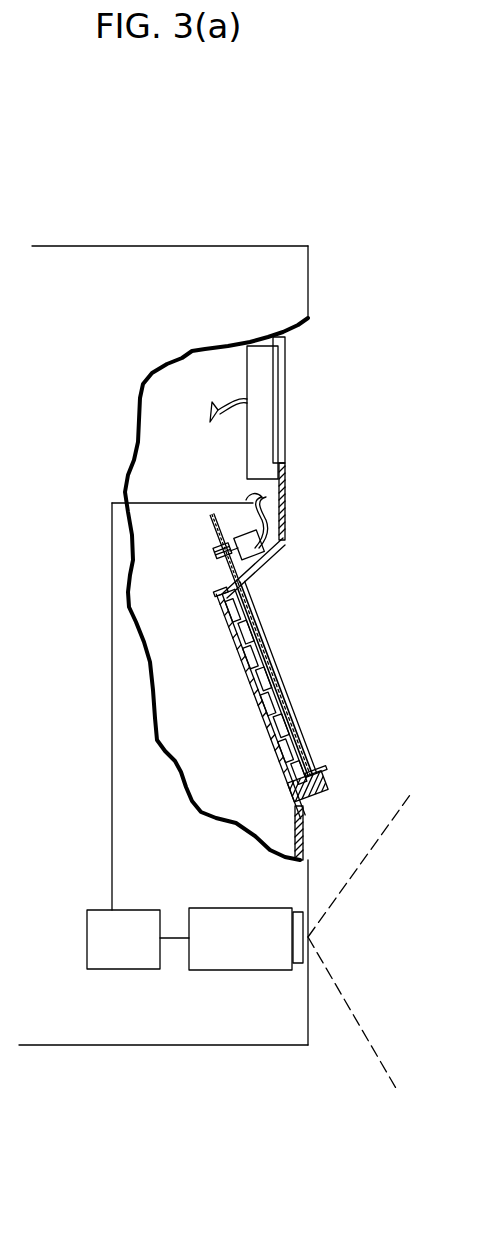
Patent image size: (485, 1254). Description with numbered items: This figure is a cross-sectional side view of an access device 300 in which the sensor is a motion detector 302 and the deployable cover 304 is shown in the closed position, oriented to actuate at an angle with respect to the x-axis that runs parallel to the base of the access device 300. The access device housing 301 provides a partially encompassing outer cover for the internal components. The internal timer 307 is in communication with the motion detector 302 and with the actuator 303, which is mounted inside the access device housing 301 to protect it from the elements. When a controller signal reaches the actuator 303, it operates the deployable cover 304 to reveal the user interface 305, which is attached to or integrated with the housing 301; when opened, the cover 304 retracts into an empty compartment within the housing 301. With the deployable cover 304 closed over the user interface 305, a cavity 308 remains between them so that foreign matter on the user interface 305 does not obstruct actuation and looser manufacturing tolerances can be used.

The access device 300 is at (134, 208).
The access device housing 301 is at (309, 258).
The motion detector 302 is at (252, 908).
The actuator 303 is at (257, 545).
The deployable cover 304 is at (213, 519).
The user interface 305 is at (263, 717).
The internal timer 307 is at (118, 970).
The cavity 308 is at (270, 698).